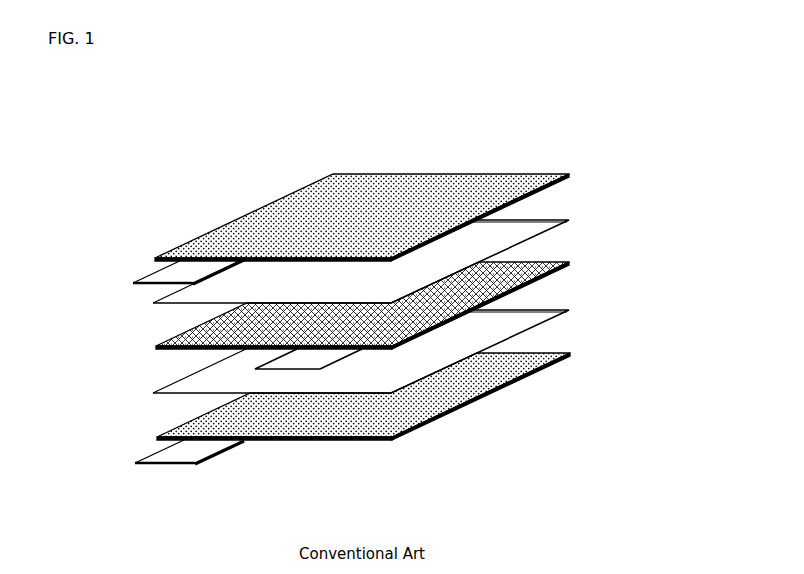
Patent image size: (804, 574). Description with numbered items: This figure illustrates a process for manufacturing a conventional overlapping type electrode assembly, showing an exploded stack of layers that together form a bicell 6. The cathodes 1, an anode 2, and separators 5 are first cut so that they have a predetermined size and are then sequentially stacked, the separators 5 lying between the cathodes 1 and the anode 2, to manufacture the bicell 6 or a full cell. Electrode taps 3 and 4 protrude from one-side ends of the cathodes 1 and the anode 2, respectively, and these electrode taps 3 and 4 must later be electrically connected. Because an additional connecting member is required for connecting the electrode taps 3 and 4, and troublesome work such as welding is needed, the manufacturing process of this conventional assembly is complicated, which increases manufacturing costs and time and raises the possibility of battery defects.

The cathode 1 is at (510, 176).
The anode 2 is at (547, 259).
The electrode tap 3 is at (160, 277).
The electrode tap 4 is at (322, 369).
The separator 5 is at (560, 317).
The bicell 6 is at (189, 154).